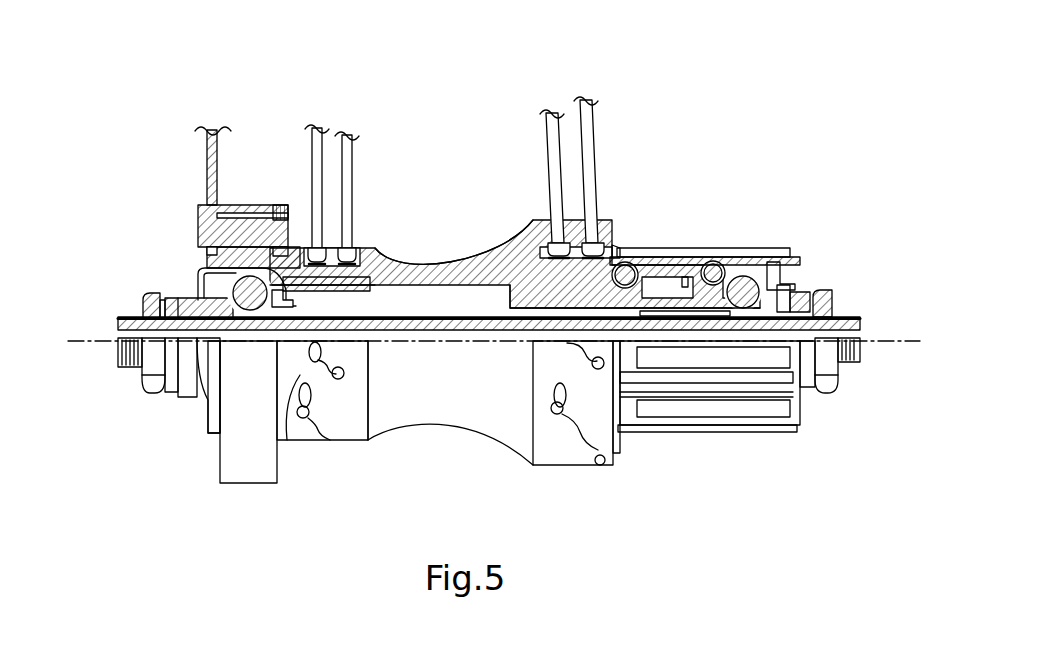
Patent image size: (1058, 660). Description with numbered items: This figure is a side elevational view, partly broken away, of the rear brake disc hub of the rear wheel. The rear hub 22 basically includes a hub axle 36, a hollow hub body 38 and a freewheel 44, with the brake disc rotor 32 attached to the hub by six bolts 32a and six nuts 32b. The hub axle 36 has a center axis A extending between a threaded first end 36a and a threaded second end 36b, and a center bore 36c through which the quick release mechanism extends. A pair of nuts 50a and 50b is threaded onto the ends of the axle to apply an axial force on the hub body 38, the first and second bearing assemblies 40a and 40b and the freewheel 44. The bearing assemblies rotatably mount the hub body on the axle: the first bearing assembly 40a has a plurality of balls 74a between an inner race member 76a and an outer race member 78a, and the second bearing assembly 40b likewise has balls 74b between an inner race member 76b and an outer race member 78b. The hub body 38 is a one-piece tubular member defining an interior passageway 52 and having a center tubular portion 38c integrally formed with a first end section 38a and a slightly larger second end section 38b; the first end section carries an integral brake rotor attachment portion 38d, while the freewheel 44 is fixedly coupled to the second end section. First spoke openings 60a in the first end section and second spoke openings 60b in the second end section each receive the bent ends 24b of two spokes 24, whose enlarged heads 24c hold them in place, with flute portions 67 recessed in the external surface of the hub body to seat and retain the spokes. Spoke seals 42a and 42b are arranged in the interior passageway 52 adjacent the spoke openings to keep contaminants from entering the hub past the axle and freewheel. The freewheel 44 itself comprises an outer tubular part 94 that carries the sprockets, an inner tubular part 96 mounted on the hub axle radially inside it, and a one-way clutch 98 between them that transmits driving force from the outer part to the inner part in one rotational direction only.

The rear hub 22 is at (642, 127).
The spokes 24 is at (325, 133).
The bent end 24b is at (358, 260).
The enlarged head 24c is at (372, 288).
The brake disc rotor 32 is at (207, 180).
The bolts 32a is at (198, 232).
The nuts 32b is at (283, 203).
The hub axle 36 is at (126, 314).
The first end 36a is at (128, 370).
The second end 36b is at (848, 364).
The center bore 36c is at (490, 260).
The hub body 38 is at (472, 256).
The first end section 38a is at (360, 442).
The second end section 38b is at (565, 466).
The center tubular portion 38c is at (493, 440).
The brake rotor attachment portion 38d is at (243, 205).
The first bearing assembly 40a is at (292, 302).
The second bearing assembly 40b is at (782, 274).
The first spoke seal 42a is at (362, 260).
The second spoke seal 42b is at (608, 252).
The freewheel 44 is at (714, 434).
The first nut 50a is at (155, 388).
The second nut 50b is at (821, 395).
The interior passageway 52 is at (463, 308).
The first spoke openings 60a is at (300, 407).
The second spoke openings 60b is at (563, 350).
The flute portions 67 is at (358, 247).
The balls 74a is at (262, 302).
The balls 74b is at (752, 277).
The inner race member 76a is at (192, 314).
The inner race member 76b is at (804, 286).
The outer race member 78a is at (200, 276).
The outer race member 78b is at (733, 257).
The outer tubular part 94 is at (672, 262).
The inner tubular part 96 is at (668, 297).
The one-way clutch 98 is at (677, 333).
The center axis A is at (95, 340).